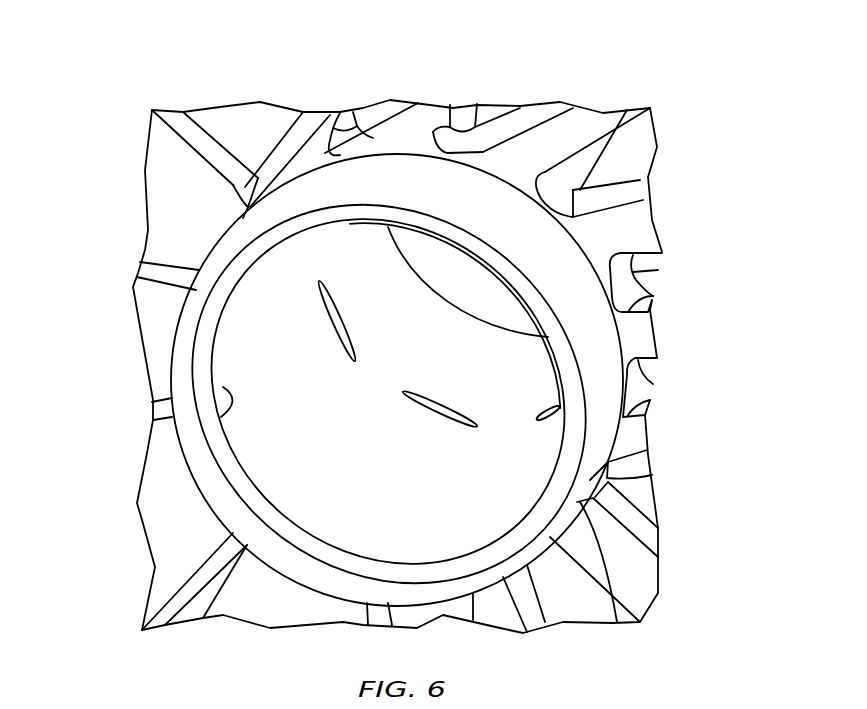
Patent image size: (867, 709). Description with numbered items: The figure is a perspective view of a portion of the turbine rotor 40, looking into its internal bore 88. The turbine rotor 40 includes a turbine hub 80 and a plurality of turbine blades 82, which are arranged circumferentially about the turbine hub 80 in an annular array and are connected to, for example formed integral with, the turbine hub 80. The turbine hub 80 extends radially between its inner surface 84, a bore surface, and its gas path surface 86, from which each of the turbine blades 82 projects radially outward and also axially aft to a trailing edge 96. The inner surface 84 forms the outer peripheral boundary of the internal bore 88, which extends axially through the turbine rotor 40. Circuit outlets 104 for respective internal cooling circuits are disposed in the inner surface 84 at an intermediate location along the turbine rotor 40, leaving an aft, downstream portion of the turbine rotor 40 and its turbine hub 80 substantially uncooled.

The turbine rotor 40 is at (675, 100).
The turbine hub 80 is at (176, 452).
The turbine blades 82 is at (205, 107).
The inner surface 84 is at (222, 417).
The gas path surface 86 is at (417, 135).
The internal bore 88 is at (304, 454).
The trailing edge 96 is at (198, 140).
The circuit outlet 104 is at (335, 327).